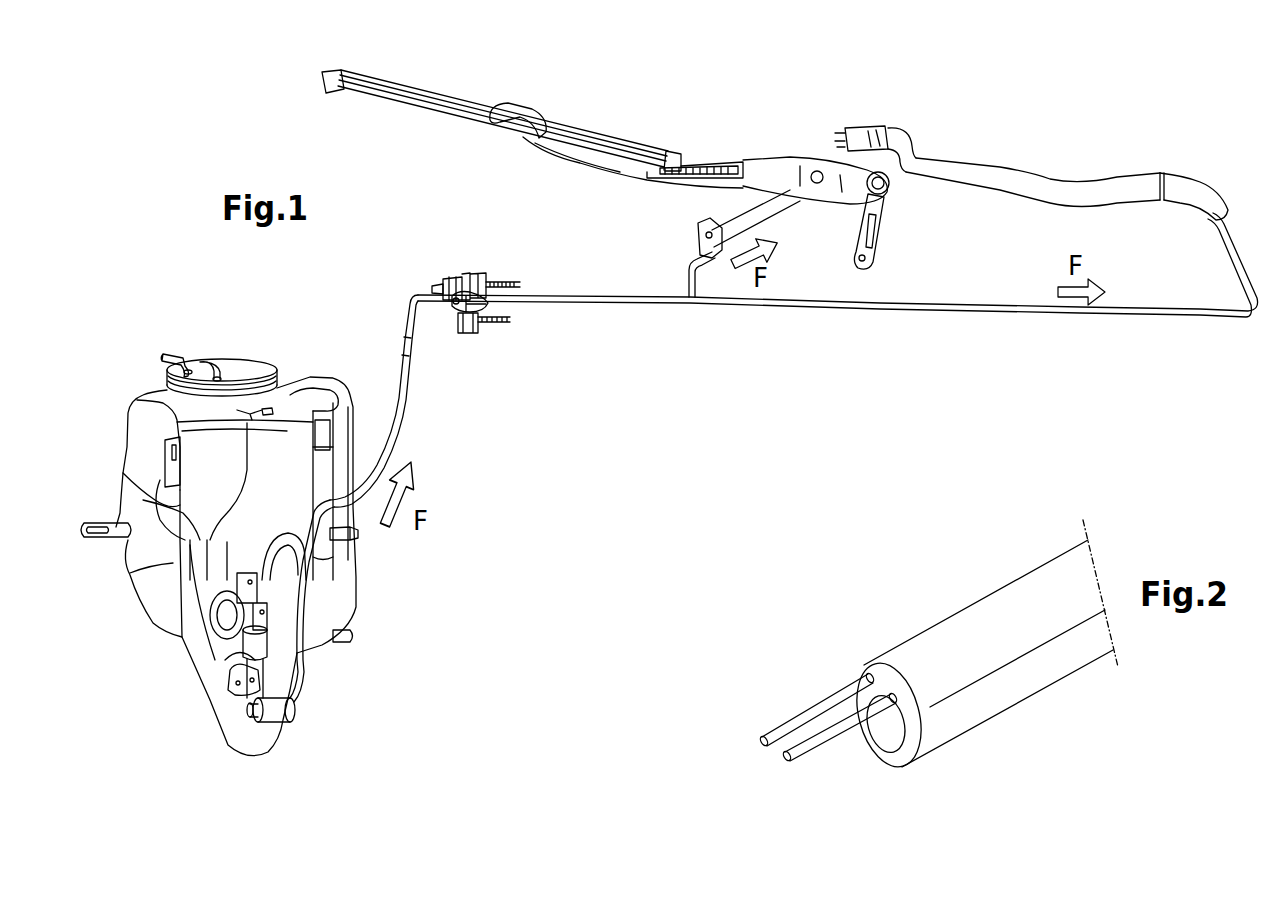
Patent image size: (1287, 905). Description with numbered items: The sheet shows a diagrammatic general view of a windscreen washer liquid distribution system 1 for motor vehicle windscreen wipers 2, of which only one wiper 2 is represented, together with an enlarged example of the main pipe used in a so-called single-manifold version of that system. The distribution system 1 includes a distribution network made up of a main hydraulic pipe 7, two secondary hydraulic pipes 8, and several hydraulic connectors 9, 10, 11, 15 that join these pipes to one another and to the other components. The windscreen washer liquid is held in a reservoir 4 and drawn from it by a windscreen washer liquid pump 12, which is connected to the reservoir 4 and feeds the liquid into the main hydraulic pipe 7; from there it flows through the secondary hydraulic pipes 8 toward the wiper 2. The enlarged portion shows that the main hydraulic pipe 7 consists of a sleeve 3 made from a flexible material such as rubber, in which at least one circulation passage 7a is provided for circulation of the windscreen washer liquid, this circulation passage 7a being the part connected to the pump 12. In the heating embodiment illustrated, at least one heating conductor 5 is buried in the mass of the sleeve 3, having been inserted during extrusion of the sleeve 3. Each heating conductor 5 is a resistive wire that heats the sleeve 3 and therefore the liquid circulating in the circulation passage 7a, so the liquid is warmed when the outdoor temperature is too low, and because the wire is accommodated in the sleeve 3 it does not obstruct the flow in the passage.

In FIG. 1, the windscreen washer liquid distribution system 1 is at (598, 400).
In FIG. 1, the windscreen wiper 2 is at (523, 94).
In FIG. 2, the sleeve 3 is at (1020, 578).
In FIG. 1, the reservoir 4 is at (237, 370).
In FIG. 2, the heating conductor 5 is at (830, 712).
In FIG. 1, the main hydraulic pipe 7 is at (410, 393).
In FIG. 2, the main hydraulic pipe 7 is at (917, 597).
In FIG. 2, the circulation passage 7a is at (888, 736).
In FIG. 1, the secondary hydraulic pipe 8 is at (688, 282).
In FIG. 1, the hydraulic connector 9 is at (254, 705).
In FIG. 1, the hydraulic connector 10 is at (456, 272).
In FIG. 1, the hydraulic connector 11 is at (492, 327).
In FIG. 1, the windscreen washer liquid pump 12 is at (290, 710).
In FIG. 1, the hydraulic connector 15 is at (860, 130).